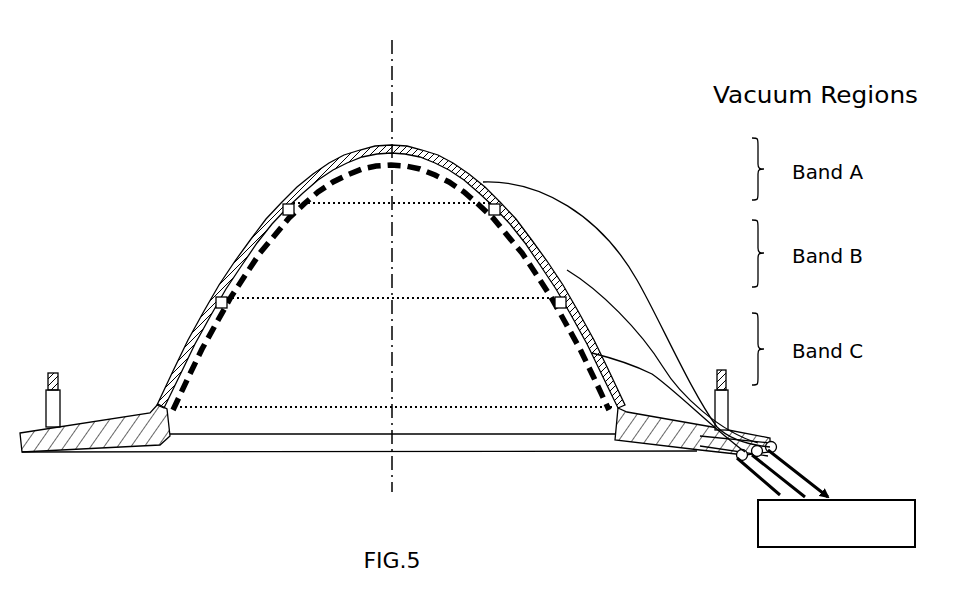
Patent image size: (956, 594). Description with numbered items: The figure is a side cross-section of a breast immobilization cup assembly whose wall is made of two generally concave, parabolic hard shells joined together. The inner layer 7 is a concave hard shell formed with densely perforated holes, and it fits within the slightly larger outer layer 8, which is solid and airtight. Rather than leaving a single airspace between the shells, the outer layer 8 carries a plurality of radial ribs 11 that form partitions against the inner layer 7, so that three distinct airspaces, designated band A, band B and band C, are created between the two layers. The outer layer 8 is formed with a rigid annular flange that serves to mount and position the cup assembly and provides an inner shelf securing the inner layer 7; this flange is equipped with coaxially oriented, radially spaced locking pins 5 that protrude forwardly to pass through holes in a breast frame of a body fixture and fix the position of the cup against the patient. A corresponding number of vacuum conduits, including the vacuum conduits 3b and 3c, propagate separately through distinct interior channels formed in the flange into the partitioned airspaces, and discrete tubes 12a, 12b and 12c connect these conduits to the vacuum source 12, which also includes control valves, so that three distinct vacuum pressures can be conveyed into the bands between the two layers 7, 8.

The locking pins 5 is at (60, 377).
The inner layer 7 is at (220, 323).
The outer layer 8 is at (412, 147).
The radial ribs 11 is at (214, 290).
The vacuum source 12 is at (857, 498).
The vacuum tube for band A 12a is at (520, 182).
The vacuum tube for band B 12b is at (587, 278).
The vacuum tube for band C 12c is at (695, 370).
The vacuum conduit 3b is at (625, 436).
The vacuum conduit 3c is at (735, 452).